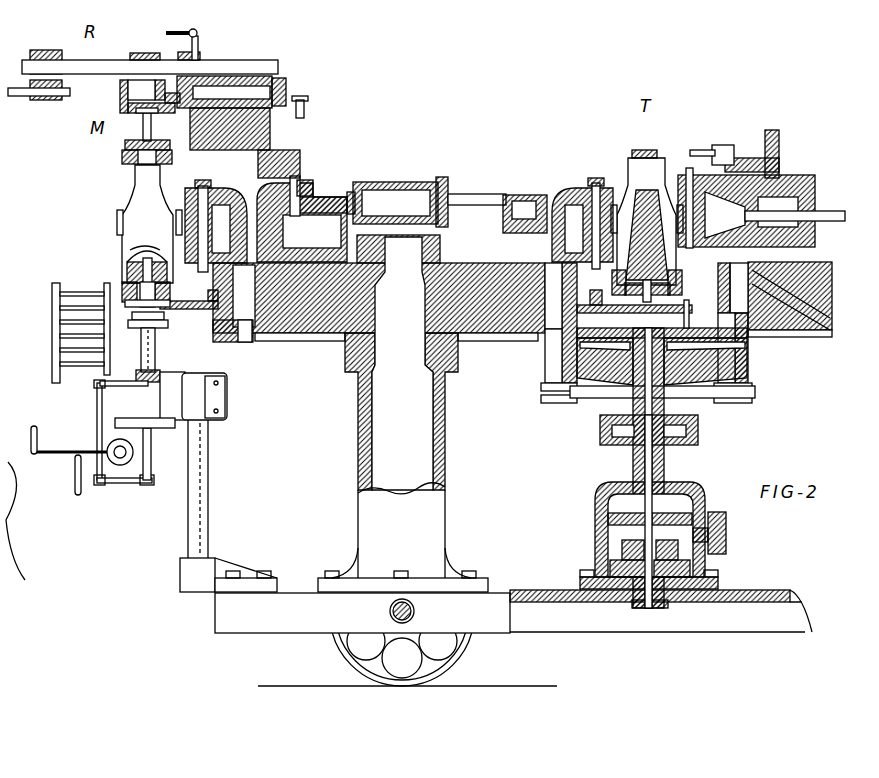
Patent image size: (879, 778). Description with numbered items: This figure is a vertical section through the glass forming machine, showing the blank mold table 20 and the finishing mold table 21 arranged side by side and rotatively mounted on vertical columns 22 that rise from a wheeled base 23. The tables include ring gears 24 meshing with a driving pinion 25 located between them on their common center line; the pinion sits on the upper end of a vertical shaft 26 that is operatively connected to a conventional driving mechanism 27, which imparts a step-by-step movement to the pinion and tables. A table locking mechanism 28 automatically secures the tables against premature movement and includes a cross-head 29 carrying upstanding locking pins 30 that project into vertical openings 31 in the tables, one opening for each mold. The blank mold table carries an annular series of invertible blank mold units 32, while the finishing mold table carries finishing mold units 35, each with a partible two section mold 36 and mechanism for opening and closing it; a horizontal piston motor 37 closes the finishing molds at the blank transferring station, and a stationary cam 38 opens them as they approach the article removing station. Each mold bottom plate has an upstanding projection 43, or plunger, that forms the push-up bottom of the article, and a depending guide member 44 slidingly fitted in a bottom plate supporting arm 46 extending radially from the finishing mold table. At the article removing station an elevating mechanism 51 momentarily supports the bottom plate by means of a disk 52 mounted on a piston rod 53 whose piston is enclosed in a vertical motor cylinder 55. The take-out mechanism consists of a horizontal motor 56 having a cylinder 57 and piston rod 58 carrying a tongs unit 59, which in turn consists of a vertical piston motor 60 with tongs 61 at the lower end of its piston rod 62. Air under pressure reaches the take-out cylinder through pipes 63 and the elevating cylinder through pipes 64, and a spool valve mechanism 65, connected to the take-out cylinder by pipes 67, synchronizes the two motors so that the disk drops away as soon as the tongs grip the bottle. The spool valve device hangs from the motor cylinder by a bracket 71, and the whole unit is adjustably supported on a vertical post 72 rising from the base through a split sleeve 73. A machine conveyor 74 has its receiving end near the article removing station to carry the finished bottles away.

The blank mold table 20 is at (832, 269).
The finishing mold table 21 is at (500, 322).
The vertical columns 22 is at (446, 423).
The wheeled base 23 is at (770, 601).
The ring gears 24 is at (212, 342).
The driving pinion 25 is at (684, 328).
The vertical shaft 26 is at (664, 406).
The driving mechanism 27 is at (589, 499).
The table locking mechanism 28 is at (758, 363).
The cross-head 29 is at (706, 362).
The locking pins 30 is at (548, 347).
The vertical openings 31 is at (649, 296).
The blank mold units 32 is at (794, 164).
The finishing mold units 35 is at (617, 175).
The partible two section mold 36 is at (133, 206).
The horizontal piston motor 37 is at (411, 175).
The stationary cam 38 is at (287, 182).
The upstanding projection 43 is at (127, 268).
The guide member 44 is at (666, 300).
The bottom plate supporting arm 46 is at (208, 301).
The elevating mechanism 51 is at (182, 463).
The disk 52 is at (165, 326).
The piston rod 53 is at (156, 353).
The vertical motor cylinder 55 is at (162, 383).
The horizontal motor 56 is at (287, 78).
The cylinder 57 is at (233, 82).
The piston rod 58 is at (240, 98).
The tongs unit 59 is at (121, 105).
The vertical piston motor 60 is at (128, 92).
The tongs 61 is at (124, 160).
The piston rod 62 is at (152, 123).
The pipes 63 is at (199, 55).
The pipes 64 is at (96, 396).
The spool valve mechanism 65 is at (119, 433).
The pipes 67 is at (38, 439).
The bracket 71 is at (141, 483).
The vertical post 72 is at (208, 453).
The split sleeve 73 is at (229, 395).
The machine conveyor 74 is at (80, 283).